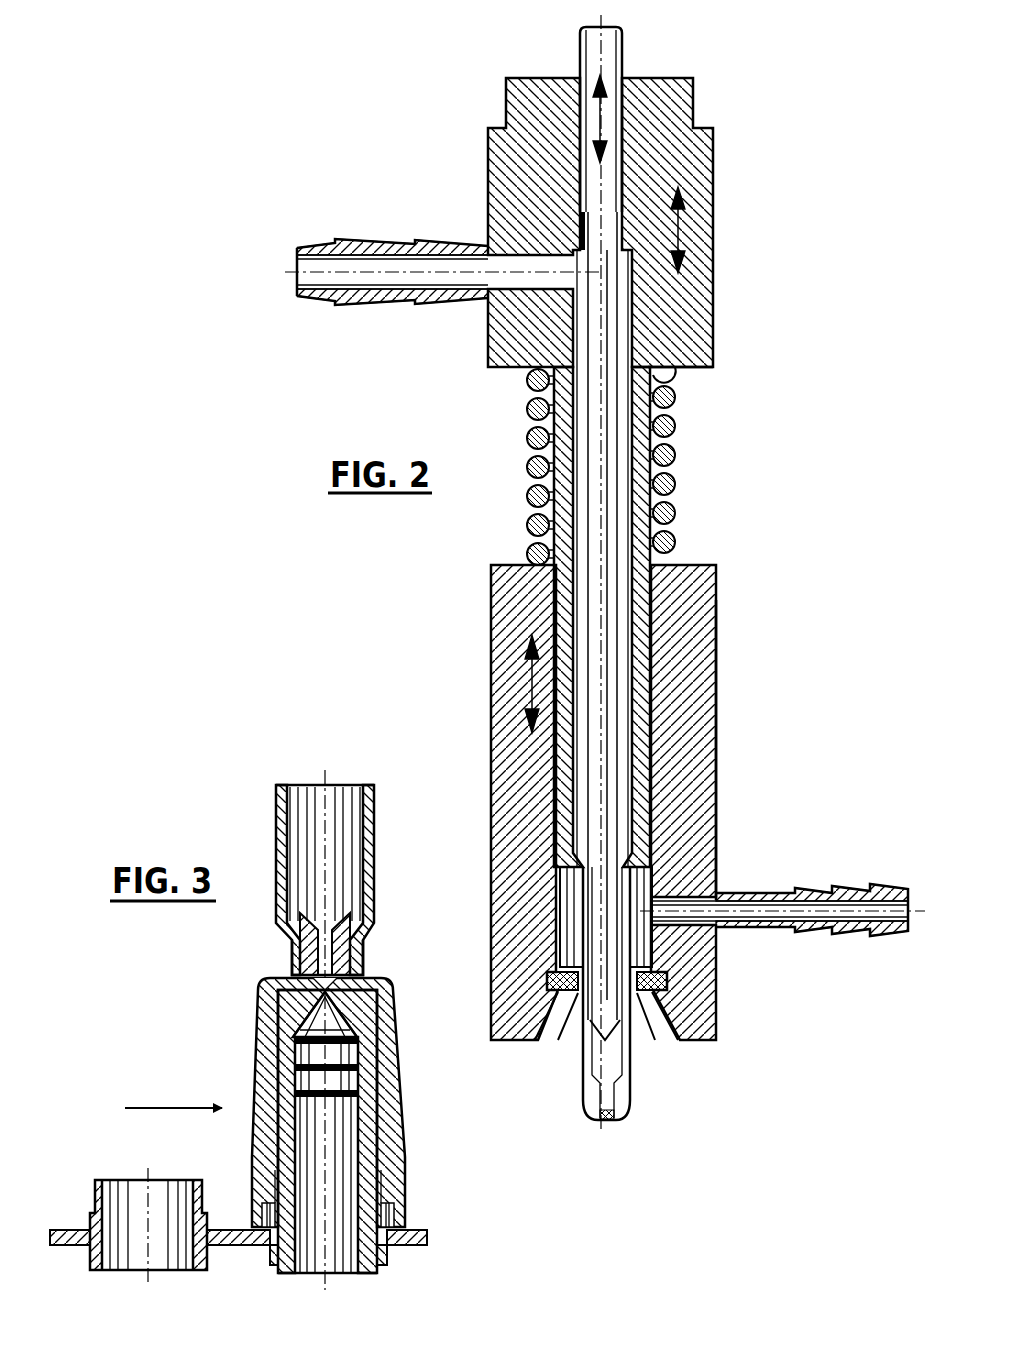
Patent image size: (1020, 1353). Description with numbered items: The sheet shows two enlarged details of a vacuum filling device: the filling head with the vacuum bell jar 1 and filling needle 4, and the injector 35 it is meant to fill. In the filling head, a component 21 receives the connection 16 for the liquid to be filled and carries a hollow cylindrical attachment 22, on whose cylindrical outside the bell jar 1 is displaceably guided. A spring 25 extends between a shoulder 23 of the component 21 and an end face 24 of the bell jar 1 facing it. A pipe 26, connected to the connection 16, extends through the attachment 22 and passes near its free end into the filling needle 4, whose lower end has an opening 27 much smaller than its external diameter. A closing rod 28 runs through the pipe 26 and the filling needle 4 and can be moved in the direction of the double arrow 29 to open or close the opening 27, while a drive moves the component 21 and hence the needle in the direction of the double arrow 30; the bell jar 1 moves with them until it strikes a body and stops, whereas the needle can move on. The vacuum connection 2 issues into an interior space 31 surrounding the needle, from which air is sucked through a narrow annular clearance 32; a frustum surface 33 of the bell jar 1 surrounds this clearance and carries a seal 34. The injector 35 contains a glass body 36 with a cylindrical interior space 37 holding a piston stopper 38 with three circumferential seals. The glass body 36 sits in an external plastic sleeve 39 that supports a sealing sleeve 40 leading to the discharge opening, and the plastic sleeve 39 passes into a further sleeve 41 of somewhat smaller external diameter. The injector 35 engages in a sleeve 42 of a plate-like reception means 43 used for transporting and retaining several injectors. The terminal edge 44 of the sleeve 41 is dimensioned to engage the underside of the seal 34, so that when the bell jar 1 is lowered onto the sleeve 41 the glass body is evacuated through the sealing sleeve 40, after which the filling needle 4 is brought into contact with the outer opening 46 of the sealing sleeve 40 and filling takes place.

In FIG. 2, the vacuum bell jar 1 is at (605, 572).
In FIG. 2, the vacuum connection 2 is at (848, 892).
In FIG. 2, the filling needle 4 is at (620, 1062).
In FIG. 2, the connection 16 is at (356, 262).
In FIG. 2, the component 21 is at (690, 102).
In FIG. 2, the hollow cylindrical attachment 22 is at (527, 452).
In FIG. 2, the shoulder 23 is at (698, 372).
In FIG. 2, the end face 24 is at (700, 564).
In FIG. 2, the spring 25 is at (678, 456).
In FIG. 2, the pipe 26 is at (575, 322).
In FIG. 2, the opening 27 is at (622, 1103).
In FIG. 2, the closing rod 28 is at (614, 636).
In FIG. 2, the double arrow 29 is at (596, 108).
In FIG. 2, the double arrow 30 is at (686, 222).
In FIG. 2, the interior space 31 is at (716, 873).
In FIG. 2, the annular clearance 32 is at (567, 1010).
In FIG. 2, the frustum surface 33 is at (547, 1022).
In FIG. 2, the seal 34 is at (548, 981).
In FIG. 3, the injector 35 is at (173, 1086).
In FIG. 3, the glass body 36 is at (372, 1273).
In FIG. 3, the cylindrical interior space 37 is at (365, 978).
In FIG. 3, the piston stopper 38 is at (295, 1057).
In FIG. 3, the plastic sleeve 39 is at (263, 1010).
In FIG. 3, the sealing sleeve 40 is at (293, 946).
In FIG. 2, the sleeve 41 is at (716, 717).
In FIG. 3, the sleeve 41 is at (374, 818).
In FIG. 3, the sleeve 42 is at (118, 1195).
In FIG. 3, the reception means 43 is at (68, 1249).
In FIG. 3, the terminal edge 44 is at (343, 847).
In FIG. 3, the outer opening 46 is at (338, 910).